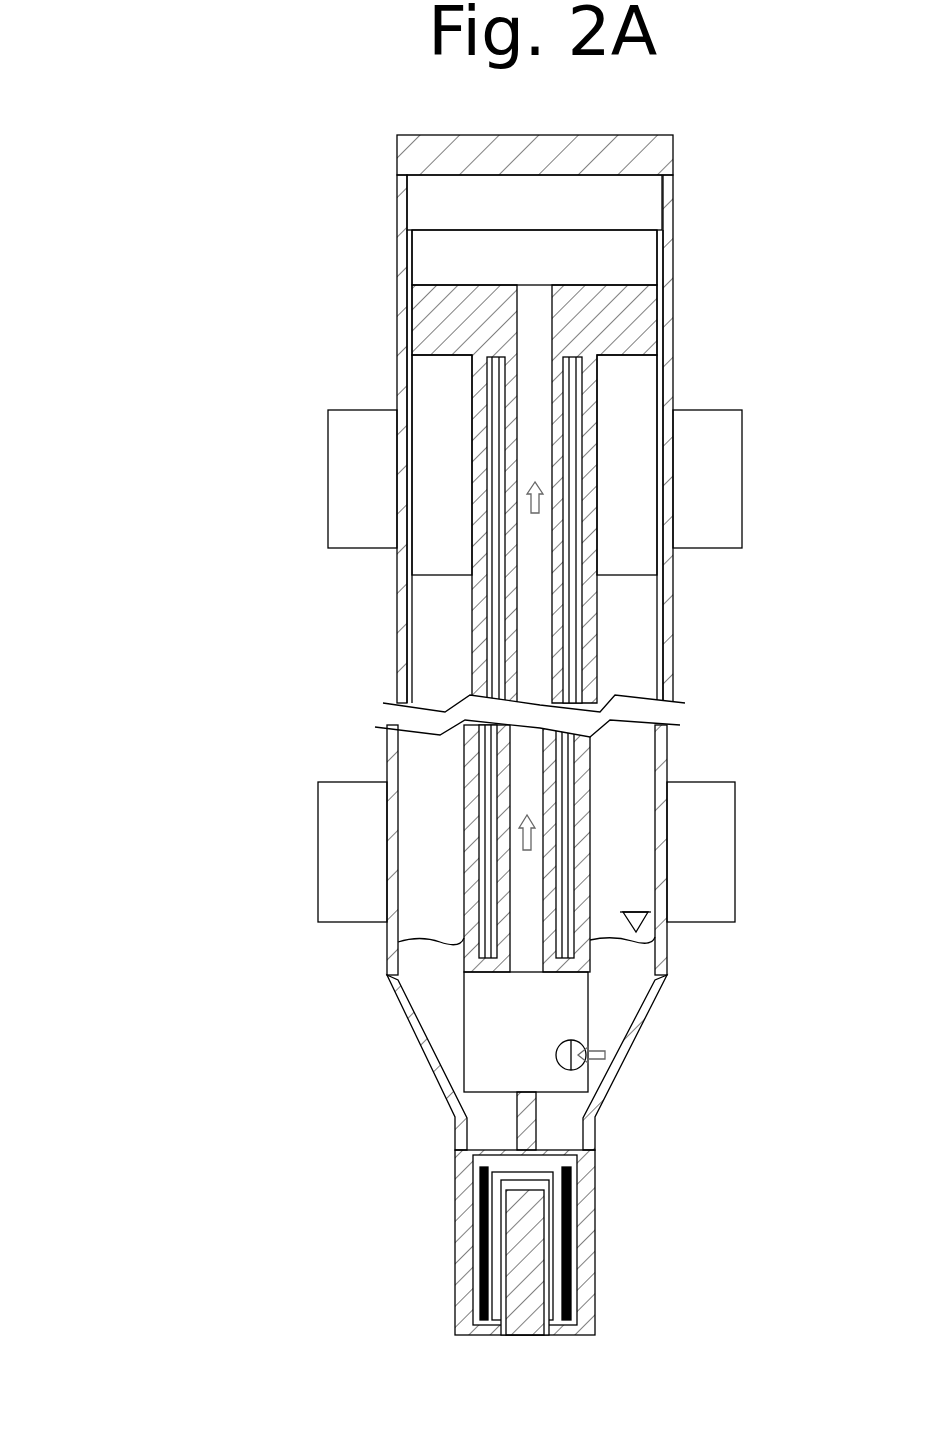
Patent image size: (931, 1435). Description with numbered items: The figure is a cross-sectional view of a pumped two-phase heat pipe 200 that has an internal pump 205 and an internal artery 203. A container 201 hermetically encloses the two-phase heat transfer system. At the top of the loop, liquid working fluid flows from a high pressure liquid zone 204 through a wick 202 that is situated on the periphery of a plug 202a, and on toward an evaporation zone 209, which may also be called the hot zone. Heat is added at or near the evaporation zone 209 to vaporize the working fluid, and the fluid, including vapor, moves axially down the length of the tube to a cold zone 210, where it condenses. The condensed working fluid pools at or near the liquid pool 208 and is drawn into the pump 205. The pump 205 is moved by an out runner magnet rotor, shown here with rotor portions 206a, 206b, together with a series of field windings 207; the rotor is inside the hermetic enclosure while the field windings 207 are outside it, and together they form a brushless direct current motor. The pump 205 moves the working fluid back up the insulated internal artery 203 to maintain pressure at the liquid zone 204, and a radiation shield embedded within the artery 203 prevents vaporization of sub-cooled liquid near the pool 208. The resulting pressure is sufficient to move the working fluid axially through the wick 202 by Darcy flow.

The pumped two-phase heat pipe 200 is at (145, 150).
The container 201 is at (633, 148).
The wick 202 is at (662, 268).
The plug 202a is at (635, 335).
The internal artery 203 is at (472, 410).
The high pressure liquid zone 204 is at (585, 212).
The internal pump 205 is at (512, 1028).
The heater electrode 206a is at (547, 1160).
The heater electrode 206b is at (480, 1197).
The field windings 207 is at (528, 1238).
The liquid pool 208 is at (623, 973).
The evaporation zone 209 is at (696, 468).
The cold zone 210 is at (688, 864).